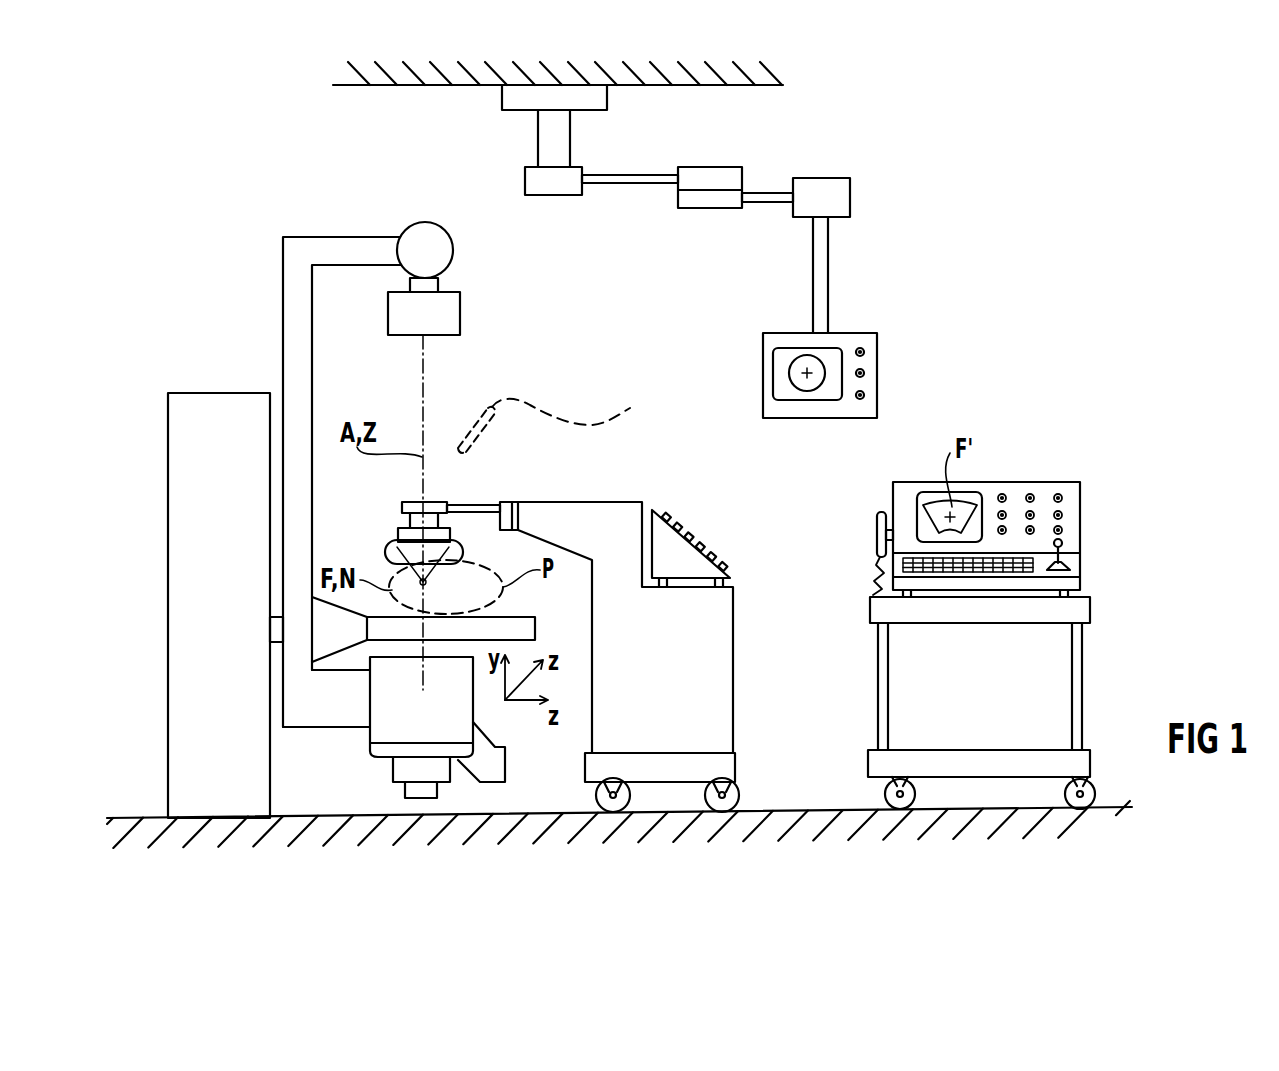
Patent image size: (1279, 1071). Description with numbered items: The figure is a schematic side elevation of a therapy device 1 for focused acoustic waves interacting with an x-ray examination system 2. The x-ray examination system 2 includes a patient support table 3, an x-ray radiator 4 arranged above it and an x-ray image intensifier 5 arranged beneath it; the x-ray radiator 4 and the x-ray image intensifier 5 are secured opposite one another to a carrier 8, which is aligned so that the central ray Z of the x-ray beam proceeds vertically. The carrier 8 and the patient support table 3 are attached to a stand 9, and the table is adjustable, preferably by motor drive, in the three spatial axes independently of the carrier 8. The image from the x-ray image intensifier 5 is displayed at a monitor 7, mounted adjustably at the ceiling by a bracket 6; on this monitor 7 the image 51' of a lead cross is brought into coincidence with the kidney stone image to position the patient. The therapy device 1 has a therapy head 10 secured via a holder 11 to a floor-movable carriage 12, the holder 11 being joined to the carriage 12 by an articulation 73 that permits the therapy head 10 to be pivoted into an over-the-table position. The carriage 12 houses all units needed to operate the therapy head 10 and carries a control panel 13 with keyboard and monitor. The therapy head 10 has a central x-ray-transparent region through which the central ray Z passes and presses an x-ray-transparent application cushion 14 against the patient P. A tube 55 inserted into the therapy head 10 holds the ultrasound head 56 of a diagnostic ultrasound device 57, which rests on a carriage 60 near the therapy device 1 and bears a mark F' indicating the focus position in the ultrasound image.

The therapy device 1 is at (660, 637).
The x-ray examination system 2 is at (199, 605).
The patient support table 3 is at (523, 627).
The x-ray radiator 4 is at (435, 257).
The x-ray image intensifier 5 is at (377, 752).
The bracket 6 is at (633, 178).
The monitor 7 is at (846, 398).
The carrier 8 is at (293, 292).
The stand 9 is at (168, 455).
The therapy head 10 is at (396, 532).
The holder 11 is at (487, 502).
The carriage 12 is at (735, 727).
The control panel 13 is at (662, 532).
The application cushion 14 is at (388, 553).
The image of the lead cross 51' is at (805, 409).
The tube 55 is at (467, 448).
The ultrasound head 56 is at (875, 533).
The ultrasound device 57 is at (1073, 540).
The carriage 60 is at (1073, 612).
The articulation 73 is at (520, 503).